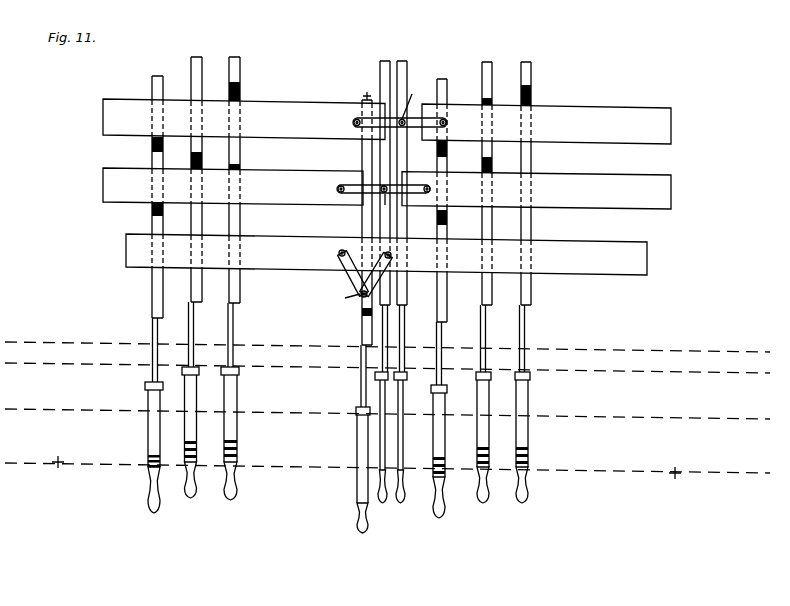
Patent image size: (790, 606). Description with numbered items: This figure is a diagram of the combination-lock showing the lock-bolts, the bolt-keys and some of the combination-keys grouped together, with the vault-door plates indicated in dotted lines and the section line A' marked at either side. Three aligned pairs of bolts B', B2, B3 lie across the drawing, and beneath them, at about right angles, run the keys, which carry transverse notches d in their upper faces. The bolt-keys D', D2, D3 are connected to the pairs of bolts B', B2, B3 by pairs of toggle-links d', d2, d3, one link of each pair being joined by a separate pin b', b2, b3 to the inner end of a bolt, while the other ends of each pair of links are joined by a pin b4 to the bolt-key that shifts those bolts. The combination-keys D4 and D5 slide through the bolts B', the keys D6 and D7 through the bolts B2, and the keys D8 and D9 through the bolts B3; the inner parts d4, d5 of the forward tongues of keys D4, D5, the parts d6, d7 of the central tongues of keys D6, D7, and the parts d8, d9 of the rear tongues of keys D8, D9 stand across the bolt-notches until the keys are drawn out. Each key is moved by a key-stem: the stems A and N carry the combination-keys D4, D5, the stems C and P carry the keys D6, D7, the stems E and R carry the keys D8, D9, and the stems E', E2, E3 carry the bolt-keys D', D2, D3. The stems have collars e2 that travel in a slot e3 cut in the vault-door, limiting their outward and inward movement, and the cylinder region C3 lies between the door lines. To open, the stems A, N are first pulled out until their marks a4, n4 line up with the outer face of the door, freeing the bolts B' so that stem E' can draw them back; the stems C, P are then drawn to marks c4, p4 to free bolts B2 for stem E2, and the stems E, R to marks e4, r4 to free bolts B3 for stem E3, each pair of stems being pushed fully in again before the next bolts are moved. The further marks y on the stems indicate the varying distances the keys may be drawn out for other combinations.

The combination-key D4 is at (152, 88).
The combination-key D6 is at (191, 76).
The combination-key D8 is at (229, 76).
The bolt-key D' is at (357, 242).
The bolt-key D2 is at (385, 61).
The bolt-key D3 is at (403, 82).
The combination-key D5 is at (447, 92).
The combination-key D7 is at (497, 308).
The combination-key D9 is at (531, 70).
The transverse notch d is at (348, 199).
The toggle-link d' is at (363, 222).
The toggle-link d2 is at (409, 188).
The toggle-link d3 is at (401, 122).
The tongue part d4 is at (152, 282).
The tongue part d5 is at (447, 287).
The tongue part d6 is at (202, 190).
The tongue part d7 is at (492, 197).
The tongue part d8 is at (240, 128).
The tongue part d9 is at (531, 128).
The bolt B3 is at (387, 121).
The bolt B2 is at (387, 188).
The bolt B' is at (386, 254).
The pin b3 is at (401, 122).
The pin b2 is at (387, 189).
The pin b' is at (364, 269).
The pin b4 is at (378, 192).
The section line A' is at (387, 421).
The cylinder C3 is at (295, 391).
The collar e2 is at (145, 390).
The slot e3 is at (440, 387).
The key-stem A is at (152, 461).
The key-stem C is at (191, 446).
The key-stem E is at (230, 443).
The key-stem E' is at (330, 482).
The key-stem E2 is at (379, 448).
The key-stem E3 is at (401, 448).
The key-stem N is at (439, 465).
The key-stem P is at (483, 450).
The key-stem R is at (521, 450).
The mark a4 is at (148, 456).
The mark c4 is at (197, 455).
The mark e4 is at (237, 455).
The mark n4 is at (433, 461).
The mark p4 is at (489, 459).
The mark r4 is at (528, 459).
The marks y is at (160, 455).